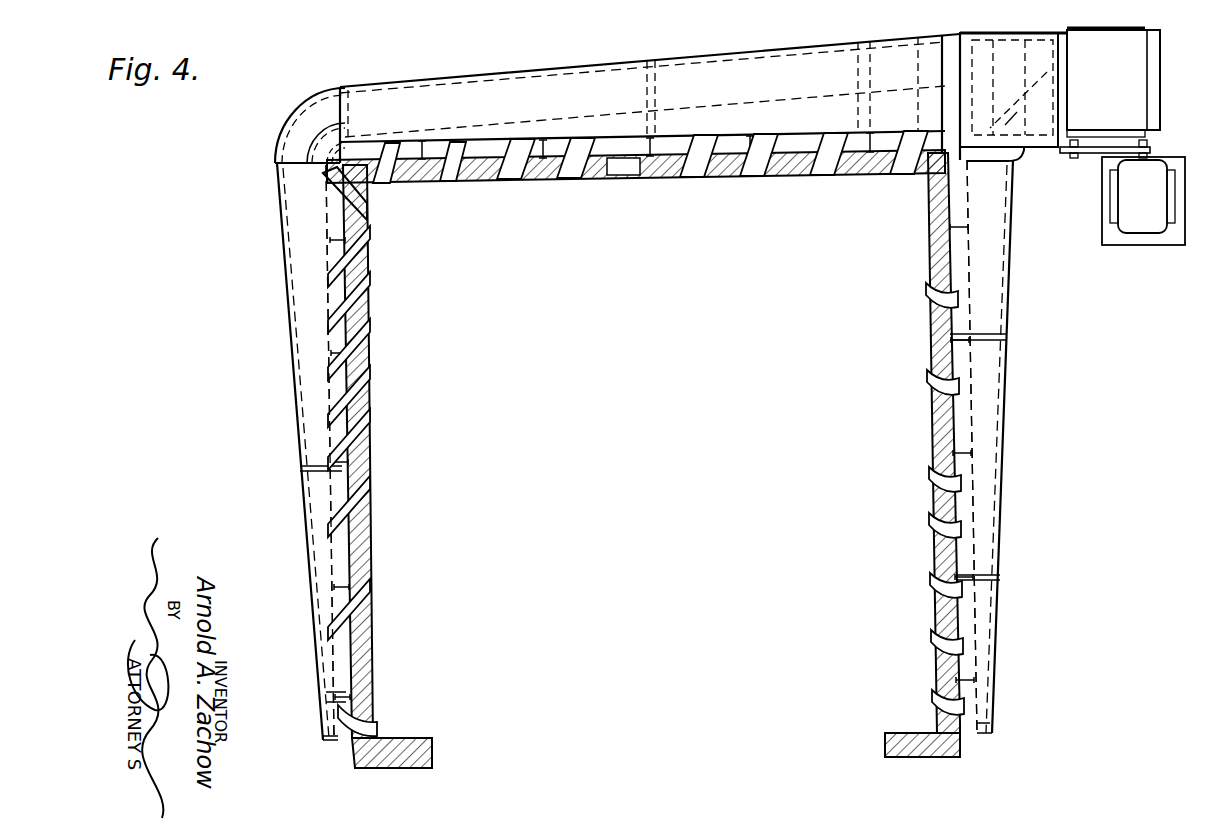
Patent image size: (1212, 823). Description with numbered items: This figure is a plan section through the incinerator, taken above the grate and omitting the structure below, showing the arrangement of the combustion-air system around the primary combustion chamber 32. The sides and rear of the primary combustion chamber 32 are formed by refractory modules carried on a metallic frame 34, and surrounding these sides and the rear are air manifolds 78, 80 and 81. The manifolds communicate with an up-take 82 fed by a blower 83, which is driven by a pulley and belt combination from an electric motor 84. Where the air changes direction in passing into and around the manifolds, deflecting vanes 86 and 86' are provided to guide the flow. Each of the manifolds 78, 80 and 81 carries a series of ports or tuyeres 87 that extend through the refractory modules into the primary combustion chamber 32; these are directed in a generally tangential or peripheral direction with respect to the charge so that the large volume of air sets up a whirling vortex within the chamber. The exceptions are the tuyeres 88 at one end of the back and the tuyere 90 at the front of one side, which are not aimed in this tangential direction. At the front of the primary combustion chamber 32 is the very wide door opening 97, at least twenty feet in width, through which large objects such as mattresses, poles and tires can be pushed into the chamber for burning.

The primary combustion chamber 32 is at (651, 449).
The metallic frame 34 is at (370, 357).
The air manifold 78 is at (307, 397).
The air manifold 80 is at (650, 98).
The air manifold 81 is at (987, 417).
The up-take 82 is at (1013, 90).
The blower 83 is at (1110, 93).
The electric motor 84 is at (1145, 218).
The deflecting vane 86 is at (1018, 101).
The deflecting vane 86' is at (299, 125).
The tuyeres 87 is at (561, 176).
The tuyeres 88 is at (443, 181).
The tuyere 90 is at (375, 725).
The door opening 97 is at (656, 750).